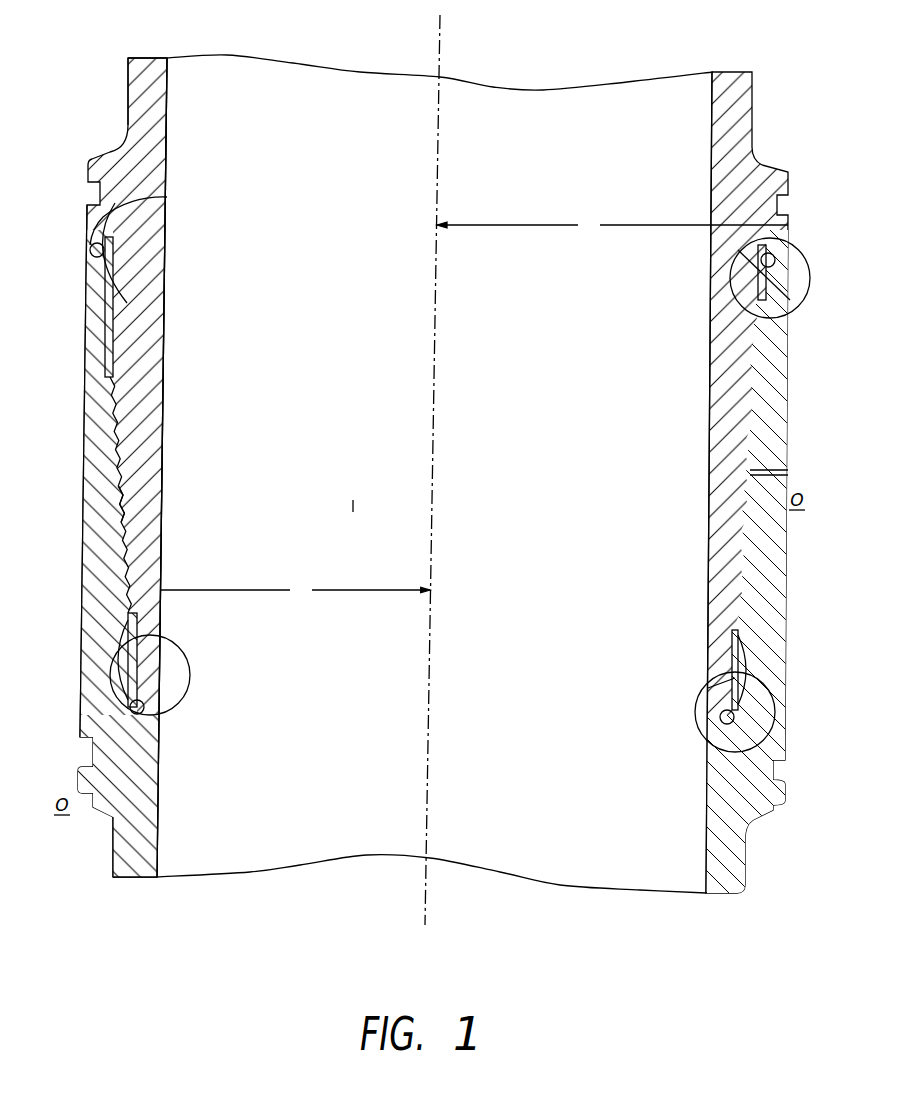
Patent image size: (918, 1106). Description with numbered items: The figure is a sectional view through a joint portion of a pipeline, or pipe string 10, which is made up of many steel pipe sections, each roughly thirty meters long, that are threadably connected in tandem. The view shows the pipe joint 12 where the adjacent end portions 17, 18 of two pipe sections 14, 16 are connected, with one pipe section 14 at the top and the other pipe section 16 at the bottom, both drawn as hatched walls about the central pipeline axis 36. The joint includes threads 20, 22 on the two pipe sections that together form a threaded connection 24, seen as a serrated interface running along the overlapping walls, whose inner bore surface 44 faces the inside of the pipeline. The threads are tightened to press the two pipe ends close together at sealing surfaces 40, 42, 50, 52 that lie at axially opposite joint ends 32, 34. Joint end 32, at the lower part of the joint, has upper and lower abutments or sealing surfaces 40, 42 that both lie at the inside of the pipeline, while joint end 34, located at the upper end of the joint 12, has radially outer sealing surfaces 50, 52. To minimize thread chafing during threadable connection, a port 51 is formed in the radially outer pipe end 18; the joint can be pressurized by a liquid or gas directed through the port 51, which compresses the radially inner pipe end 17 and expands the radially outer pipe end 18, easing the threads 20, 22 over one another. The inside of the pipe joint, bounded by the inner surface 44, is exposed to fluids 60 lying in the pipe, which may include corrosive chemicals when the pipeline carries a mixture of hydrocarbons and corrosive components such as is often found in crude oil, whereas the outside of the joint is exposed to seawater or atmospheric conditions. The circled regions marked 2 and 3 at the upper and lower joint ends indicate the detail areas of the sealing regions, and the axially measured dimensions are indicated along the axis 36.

The pipe string 10 is at (270, 48).
The pipe joint 12 is at (103, 86).
The pipe section 14 is at (167, 88).
The pipe section 16 is at (163, 840).
The radially inner pipe end 17 is at (165, 370).
The radially outer pipe end 18 is at (80, 492).
The thread 20 is at (119, 456).
The thread 22 is at (125, 488).
The threaded connection 24 is at (125, 513).
The joint end 32 is at (162, 692).
The joint end 34 is at (117, 253).
The axis 36 is at (438, 360).
The sealing surface 40 is at (145, 712).
The sealing surface 42 is at (160, 665).
The inner bore surface 44 is at (163, 418).
The sealing surface 50 is at (113, 300).
The port 51 is at (790, 472).
The sealing surface 52 is at (167, 197).
The fluids 60 is at (518, 448).
The section line 2- 2 is at (785, 234).
The section line 3- 3 is at (708, 688).